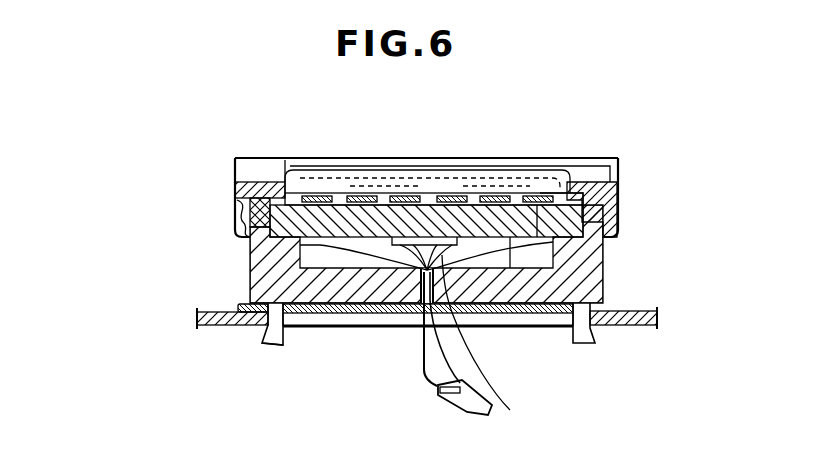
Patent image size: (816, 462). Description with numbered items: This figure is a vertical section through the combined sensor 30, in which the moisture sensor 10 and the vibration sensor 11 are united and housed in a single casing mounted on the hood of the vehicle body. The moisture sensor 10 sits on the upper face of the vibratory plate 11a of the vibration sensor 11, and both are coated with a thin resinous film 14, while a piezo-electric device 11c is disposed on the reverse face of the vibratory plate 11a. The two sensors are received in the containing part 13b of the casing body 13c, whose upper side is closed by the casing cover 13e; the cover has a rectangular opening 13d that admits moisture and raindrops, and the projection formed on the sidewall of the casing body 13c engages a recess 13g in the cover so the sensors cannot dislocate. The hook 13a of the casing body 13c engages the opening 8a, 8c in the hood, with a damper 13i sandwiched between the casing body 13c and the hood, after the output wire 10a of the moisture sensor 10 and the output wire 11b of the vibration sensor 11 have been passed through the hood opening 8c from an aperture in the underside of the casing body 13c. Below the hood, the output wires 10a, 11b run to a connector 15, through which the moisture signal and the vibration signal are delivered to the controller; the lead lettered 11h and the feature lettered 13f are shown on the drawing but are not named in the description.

The opening 8a is at (630, 310).
The opening 8c is at (265, 347).
The moisture sensor 10 is at (537, 205).
The output wire 10a is at (325, 248).
The vibration sensor 11 is at (583, 192).
The vibratory plate 11a is at (572, 192).
The output wire 11b is at (372, 258).
The piezo-electric device 11c is at (422, 297).
The lead wire to connector 11h is at (510, 410).
The hook 13a is at (262, 333).
The containing part 13b is at (240, 230).
The casing body 13c is at (617, 243).
The rectangular opening 13d is at (302, 176).
The casing cover 13e is at (368, 162).
The housing cross-hatched block 13f is at (245, 205).
The recess 13g is at (248, 182).
The damper 13i is at (242, 303).
The thin resinous film 14 is at (330, 192).
The connector 15 is at (437, 390).
The combined sensor 30 is at (457, 156).